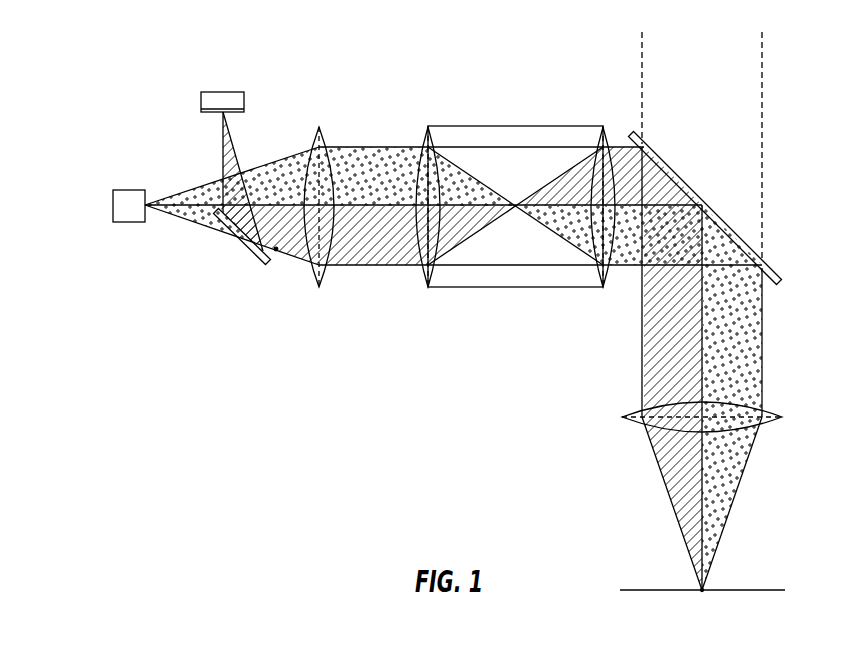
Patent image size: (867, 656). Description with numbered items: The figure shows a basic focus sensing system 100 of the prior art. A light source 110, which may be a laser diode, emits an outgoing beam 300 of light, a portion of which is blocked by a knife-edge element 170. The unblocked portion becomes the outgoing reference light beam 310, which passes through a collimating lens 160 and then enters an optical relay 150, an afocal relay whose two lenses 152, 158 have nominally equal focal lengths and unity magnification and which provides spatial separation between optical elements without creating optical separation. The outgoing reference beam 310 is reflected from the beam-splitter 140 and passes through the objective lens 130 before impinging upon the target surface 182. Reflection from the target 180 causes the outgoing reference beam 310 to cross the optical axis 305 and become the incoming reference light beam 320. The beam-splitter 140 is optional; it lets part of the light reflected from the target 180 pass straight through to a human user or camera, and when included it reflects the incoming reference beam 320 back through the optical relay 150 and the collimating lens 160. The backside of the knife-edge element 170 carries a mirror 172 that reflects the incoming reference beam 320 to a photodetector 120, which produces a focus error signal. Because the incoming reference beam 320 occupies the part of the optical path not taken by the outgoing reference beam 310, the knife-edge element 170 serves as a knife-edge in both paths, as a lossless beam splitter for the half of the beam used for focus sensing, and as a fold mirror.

The focus sensing system 100 is at (135, 45).
The light source 110 is at (130, 188).
The photodetector 120 is at (222, 92).
The objective lens 130 is at (772, 408).
The beam-splitter 140 is at (774, 270).
The optical relay 150 is at (520, 300).
The lens 152 is at (606, 278).
The lens 158 is at (422, 272).
The collimating lens 160 is at (324, 274).
The knife-edge element 170 is at (247, 251).
The mirror 172 is at (276, 252).
The target 180 is at (702, 592).
The target surface 182 is at (745, 590).
The outgoing beam 300 is at (188, 190).
The optical axis 305 is at (703, 488).
The outgoing reference light beam 310 is at (372, 152).
The incoming reference light beam 320 is at (236, 134).